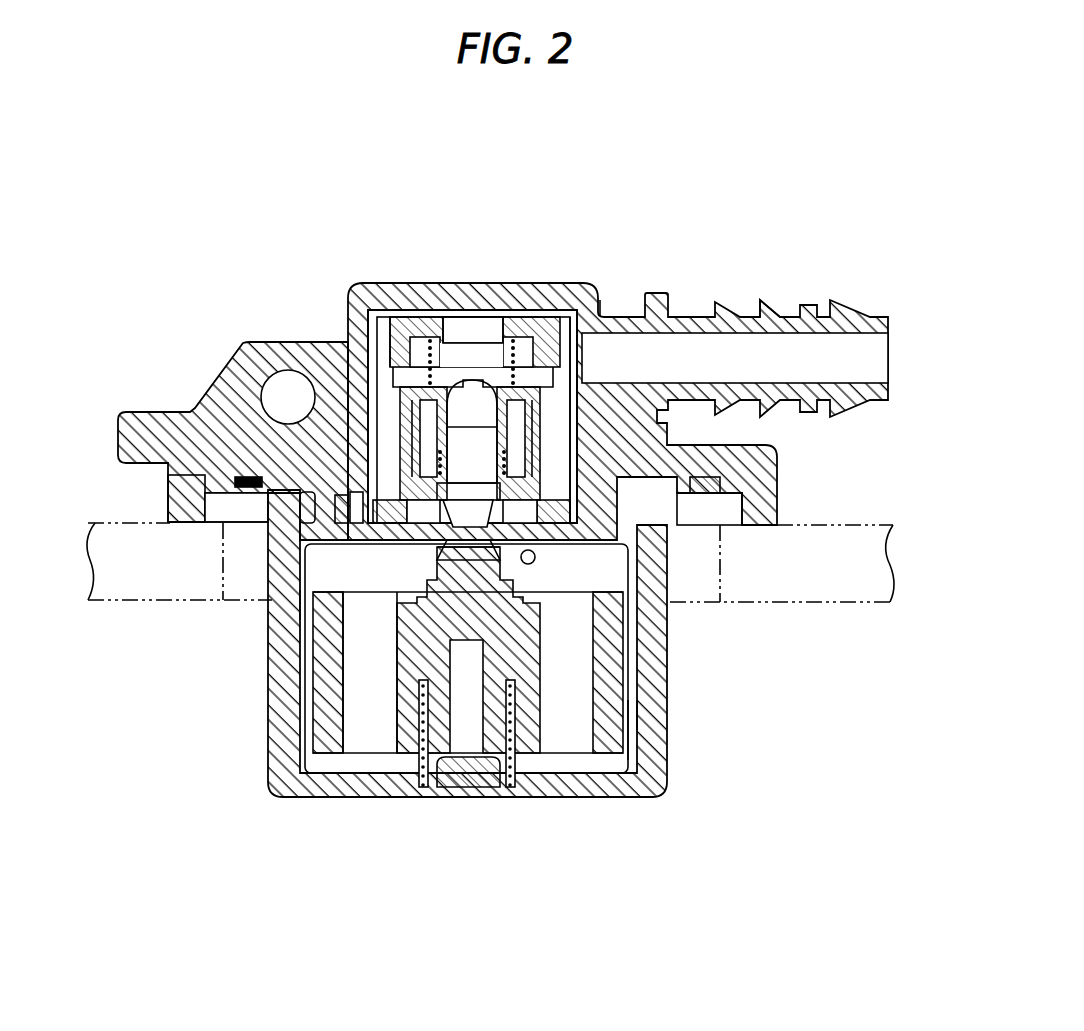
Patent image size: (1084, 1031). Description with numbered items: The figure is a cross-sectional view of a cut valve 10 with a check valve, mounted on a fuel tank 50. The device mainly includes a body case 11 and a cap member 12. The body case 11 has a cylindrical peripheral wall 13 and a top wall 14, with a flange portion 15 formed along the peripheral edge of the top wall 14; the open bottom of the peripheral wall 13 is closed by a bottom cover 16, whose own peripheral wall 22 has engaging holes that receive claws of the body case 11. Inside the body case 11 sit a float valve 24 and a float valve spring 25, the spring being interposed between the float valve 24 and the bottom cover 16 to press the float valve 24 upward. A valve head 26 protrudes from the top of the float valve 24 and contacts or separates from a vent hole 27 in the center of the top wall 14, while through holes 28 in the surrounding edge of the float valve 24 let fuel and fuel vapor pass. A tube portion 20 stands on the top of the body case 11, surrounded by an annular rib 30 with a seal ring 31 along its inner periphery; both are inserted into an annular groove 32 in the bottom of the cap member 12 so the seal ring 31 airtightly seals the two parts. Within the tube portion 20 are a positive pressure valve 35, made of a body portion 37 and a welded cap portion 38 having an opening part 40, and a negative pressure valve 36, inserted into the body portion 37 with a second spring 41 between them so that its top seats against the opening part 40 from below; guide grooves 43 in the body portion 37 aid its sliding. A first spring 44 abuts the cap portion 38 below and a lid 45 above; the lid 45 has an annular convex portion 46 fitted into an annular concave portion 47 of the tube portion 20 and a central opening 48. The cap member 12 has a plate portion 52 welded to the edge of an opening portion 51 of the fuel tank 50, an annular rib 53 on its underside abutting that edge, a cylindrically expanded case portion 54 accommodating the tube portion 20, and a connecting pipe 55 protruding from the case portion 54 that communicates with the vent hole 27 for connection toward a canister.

The cut valve 10 is at (631, 199).
The body case 11 is at (665, 678).
The cap member 12 is at (700, 246).
The peripheral wall 13 is at (655, 714).
The top wall 14 is at (300, 600).
The flange portion 15 is at (225, 527).
The bottom cover 16 is at (593, 798).
The tube portion 20 is at (284, 343).
The peripheral wall 22 is at (665, 773).
The float valve 24 is at (633, 733).
The float valve spring 25 is at (422, 792).
The valve head 26 is at (495, 548).
The vent hole 27 is at (447, 548).
The through holes 28 is at (365, 722).
The annular rib 30 is at (492, 567).
The seal ring 31 is at (613, 510).
The annular groove 32 is at (700, 487).
The positive pressure valve 35 is at (681, 443).
The negative pressure valve 36 is at (487, 322).
The body portion 37 is at (533, 458).
The cap portion 38 is at (540, 398).
The opening part 40 is at (448, 312).
The second spring 41 is at (447, 463).
The guide grooves 43 is at (198, 440).
The first spring 44 is at (529, 322).
The lid 45 is at (395, 320).
The annular convex portion 46 is at (574, 322).
The annular concave portion 47 is at (388, 395).
The opening 48 is at (465, 320).
The fuel tank 50 is at (90, 603).
The opening portion 51 is at (223, 603).
The plate portion 52 is at (165, 432).
The annular rib 53 is at (165, 515).
The case portion 54 is at (605, 298).
The connecting pipe 55 is at (773, 316).